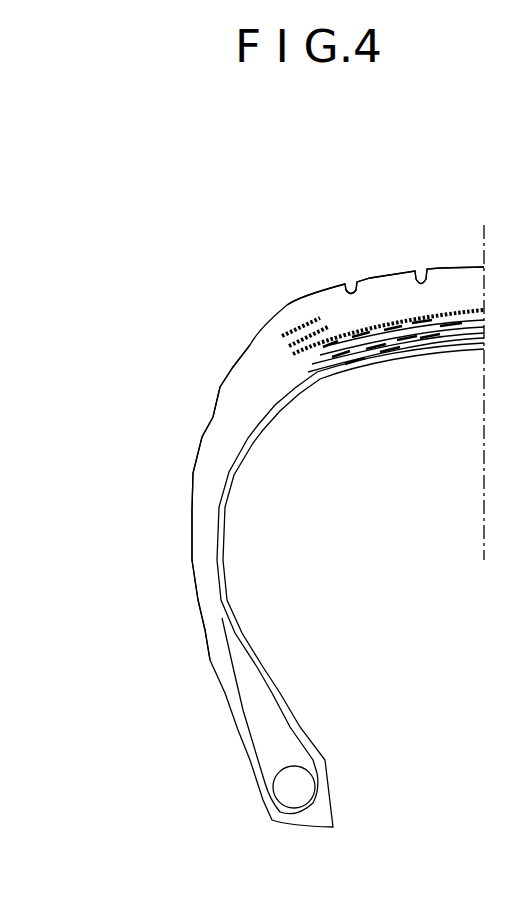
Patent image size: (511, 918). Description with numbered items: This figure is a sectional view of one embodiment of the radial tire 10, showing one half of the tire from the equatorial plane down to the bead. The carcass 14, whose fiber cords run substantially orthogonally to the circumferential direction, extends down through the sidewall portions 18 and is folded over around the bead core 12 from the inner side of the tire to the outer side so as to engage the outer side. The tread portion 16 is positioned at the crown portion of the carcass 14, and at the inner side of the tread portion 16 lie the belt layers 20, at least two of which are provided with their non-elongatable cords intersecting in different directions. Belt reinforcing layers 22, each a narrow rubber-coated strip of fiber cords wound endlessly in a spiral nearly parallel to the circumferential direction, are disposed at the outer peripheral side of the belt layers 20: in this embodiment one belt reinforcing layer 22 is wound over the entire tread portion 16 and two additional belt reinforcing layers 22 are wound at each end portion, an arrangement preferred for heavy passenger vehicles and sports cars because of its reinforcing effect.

The radial tire 10 is at (283, 215).
The bead core 12 is at (297, 787).
The carcass 14 is at (224, 618).
The tread portion 16 is at (376, 277).
The sidewall portions 18 is at (192, 522).
The belt layers 20 is at (338, 362).
The belt reinforcing layer 22 is at (312, 318).